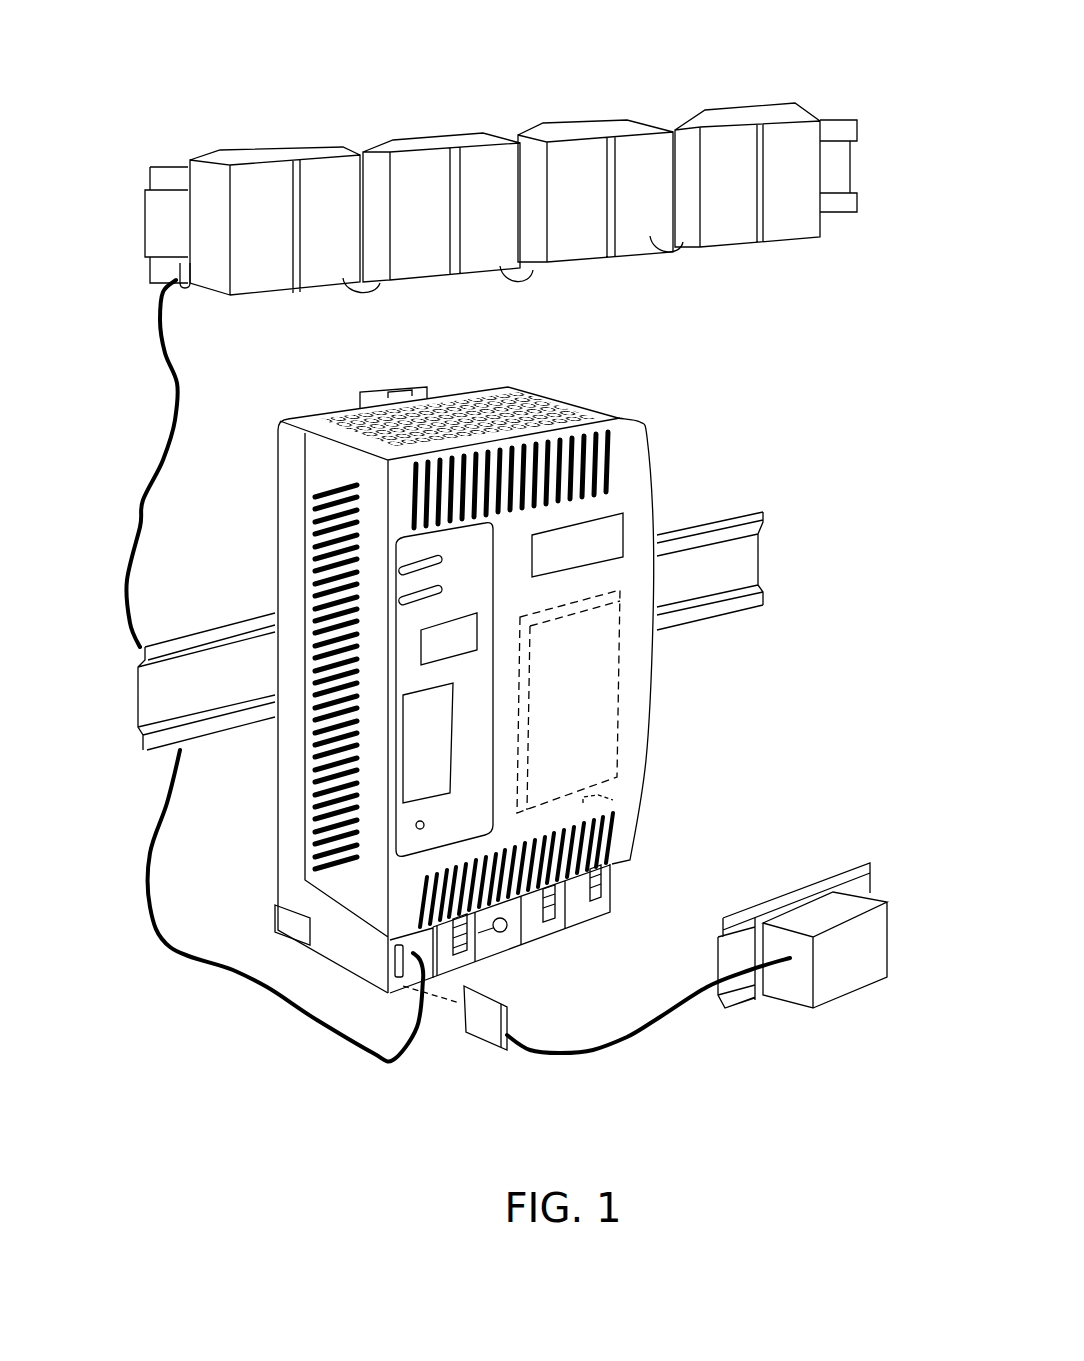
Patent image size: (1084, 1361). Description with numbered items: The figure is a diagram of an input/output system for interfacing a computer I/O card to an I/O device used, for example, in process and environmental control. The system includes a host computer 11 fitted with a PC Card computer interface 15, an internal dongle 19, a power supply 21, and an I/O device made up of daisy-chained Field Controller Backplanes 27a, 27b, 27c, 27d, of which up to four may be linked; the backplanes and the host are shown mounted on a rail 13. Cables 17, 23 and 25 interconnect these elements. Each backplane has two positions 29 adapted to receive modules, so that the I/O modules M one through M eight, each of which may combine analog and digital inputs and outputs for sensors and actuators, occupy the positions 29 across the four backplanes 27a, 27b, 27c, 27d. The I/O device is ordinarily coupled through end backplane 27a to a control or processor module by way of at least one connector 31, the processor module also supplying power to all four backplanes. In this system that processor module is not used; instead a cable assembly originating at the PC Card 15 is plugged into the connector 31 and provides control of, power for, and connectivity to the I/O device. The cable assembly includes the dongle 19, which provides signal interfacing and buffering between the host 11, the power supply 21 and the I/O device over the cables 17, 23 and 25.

The host computer 11 is at (608, 410).
The DIN mounting rail 13 is at (847, 115).
The PC Card computer interface 15 is at (613, 727).
The cable 17 is at (613, 803).
The internal dongle 19 is at (396, 995).
The power supply 21 is at (877, 928).
The cable 23 is at (650, 1028).
The cable 25 is at (150, 478).
The end backplane 27a is at (178, 156).
The backplane 27b is at (345, 150).
The backplane 27c is at (505, 132).
The backplane 27d is at (658, 124).
The positions 29 is at (267, 297).
The connector 31 is at (178, 285).